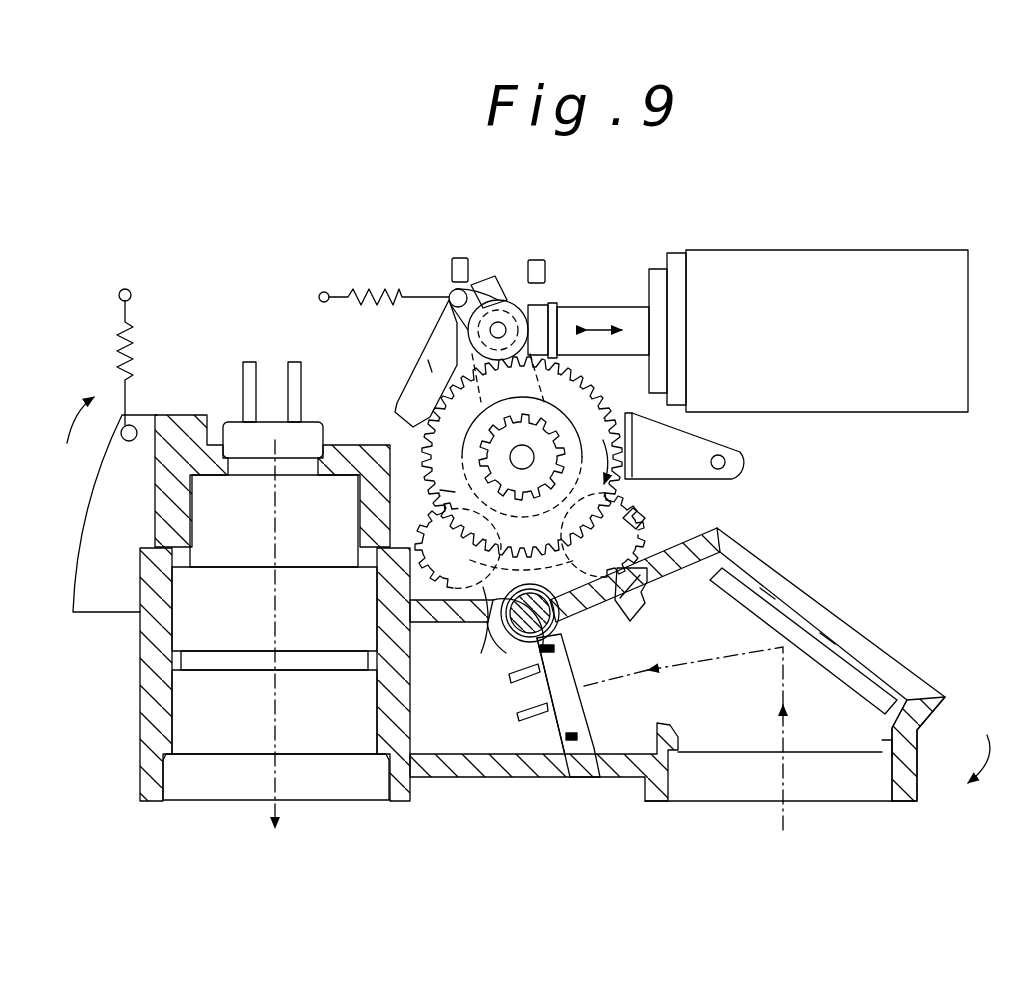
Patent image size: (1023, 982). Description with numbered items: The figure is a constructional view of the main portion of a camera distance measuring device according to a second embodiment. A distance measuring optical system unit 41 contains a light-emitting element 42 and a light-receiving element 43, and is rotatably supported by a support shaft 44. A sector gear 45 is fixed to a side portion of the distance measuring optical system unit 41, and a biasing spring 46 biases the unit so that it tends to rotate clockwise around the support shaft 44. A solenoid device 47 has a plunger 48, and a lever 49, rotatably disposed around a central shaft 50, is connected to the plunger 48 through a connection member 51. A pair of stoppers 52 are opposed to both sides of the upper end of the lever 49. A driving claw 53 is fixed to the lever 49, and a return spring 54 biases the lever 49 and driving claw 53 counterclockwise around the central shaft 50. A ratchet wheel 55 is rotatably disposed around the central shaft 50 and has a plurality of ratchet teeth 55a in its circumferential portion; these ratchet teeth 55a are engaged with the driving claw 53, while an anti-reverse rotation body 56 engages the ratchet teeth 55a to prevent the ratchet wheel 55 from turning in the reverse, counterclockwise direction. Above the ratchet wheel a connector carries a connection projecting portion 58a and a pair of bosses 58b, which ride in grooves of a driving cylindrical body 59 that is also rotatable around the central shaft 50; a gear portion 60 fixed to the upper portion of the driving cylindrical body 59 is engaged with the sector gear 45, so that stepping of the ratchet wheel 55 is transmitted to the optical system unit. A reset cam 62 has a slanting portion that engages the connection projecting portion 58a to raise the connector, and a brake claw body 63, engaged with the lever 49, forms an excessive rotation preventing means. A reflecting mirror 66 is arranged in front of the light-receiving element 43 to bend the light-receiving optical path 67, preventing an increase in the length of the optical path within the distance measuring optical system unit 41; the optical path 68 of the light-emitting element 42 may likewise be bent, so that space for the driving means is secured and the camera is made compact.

The distance measuring optical system unit 41 is at (897, 640).
The light-emitting element 42 is at (270, 420).
The light-receiving element 43 is at (585, 716).
The support shaft 44 is at (562, 630).
The sector gear 45 is at (510, 677).
The biasing spring 46 is at (152, 304).
The solenoid device 47 is at (910, 256).
The plunger 48 is at (620, 306).
The lever 49 is at (481, 280).
The central shaft 50 is at (540, 410).
The connection member 51 is at (557, 312).
The stoppers 52 is at (452, 258).
The driving claw 53 is at (400, 402).
The return spring 54 is at (370, 292).
The ratchet wheel 55 is at (626, 481).
The ratchet teeth 55a is at (424, 364).
The anti-reverse rotation body 56 is at (734, 463).
The connection projecting portion 58a is at (650, 600).
The bosses 58b is at (698, 420).
The driving cylindrical body 59 is at (422, 432).
The gear portion 60 is at (490, 497).
The reset cam 62 is at (634, 521).
The brake claw body 63 is at (495, 554).
The reflecting mirror 66 is at (873, 700).
The light-receiving optical path 67 is at (790, 825).
The optical path 68 is at (285, 819).